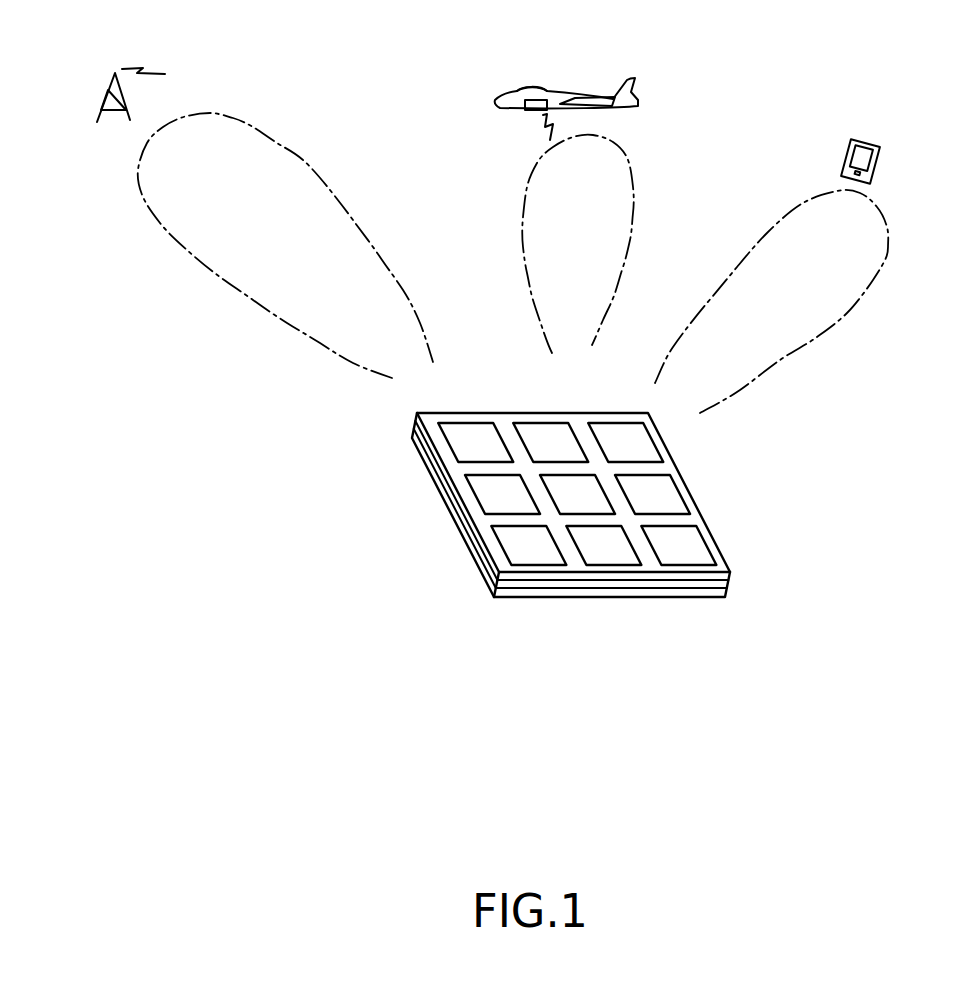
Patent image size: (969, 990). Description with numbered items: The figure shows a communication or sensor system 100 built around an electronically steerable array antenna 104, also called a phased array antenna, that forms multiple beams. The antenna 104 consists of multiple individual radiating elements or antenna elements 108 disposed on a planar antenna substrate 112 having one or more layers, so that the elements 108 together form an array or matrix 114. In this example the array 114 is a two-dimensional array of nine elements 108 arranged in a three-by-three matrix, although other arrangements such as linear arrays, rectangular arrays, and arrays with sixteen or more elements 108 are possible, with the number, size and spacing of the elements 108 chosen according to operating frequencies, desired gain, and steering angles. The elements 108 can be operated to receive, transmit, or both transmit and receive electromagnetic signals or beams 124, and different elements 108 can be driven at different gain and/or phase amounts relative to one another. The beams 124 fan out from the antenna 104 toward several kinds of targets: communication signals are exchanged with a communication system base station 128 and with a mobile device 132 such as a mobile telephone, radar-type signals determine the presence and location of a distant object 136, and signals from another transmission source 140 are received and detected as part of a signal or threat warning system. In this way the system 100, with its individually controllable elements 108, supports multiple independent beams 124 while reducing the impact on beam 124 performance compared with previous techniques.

The communication or sensor system 100 is at (566, 585).
The electronically steerable array antenna 104 is at (566, 508).
The antenna elements 108 is at (668, 495).
The planar antenna substrate 112 is at (718, 565).
The array 114 is at (438, 441).
The electromagnetic signals or beams 124 is at (200, 258).
The communication system base station 128 is at (102, 122).
The mobile device 132 is at (870, 142).
The distant object 136 is at (527, 85).
The other transmission source 140 is at (535, 108).